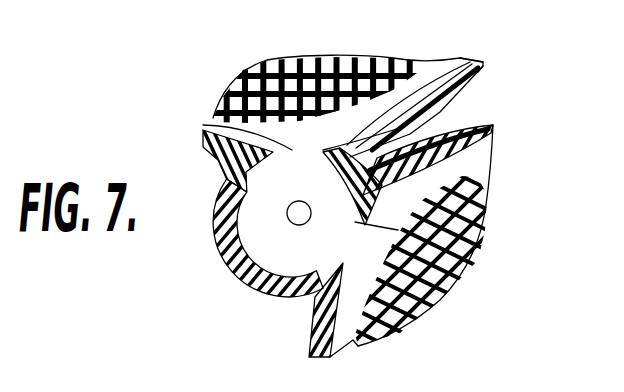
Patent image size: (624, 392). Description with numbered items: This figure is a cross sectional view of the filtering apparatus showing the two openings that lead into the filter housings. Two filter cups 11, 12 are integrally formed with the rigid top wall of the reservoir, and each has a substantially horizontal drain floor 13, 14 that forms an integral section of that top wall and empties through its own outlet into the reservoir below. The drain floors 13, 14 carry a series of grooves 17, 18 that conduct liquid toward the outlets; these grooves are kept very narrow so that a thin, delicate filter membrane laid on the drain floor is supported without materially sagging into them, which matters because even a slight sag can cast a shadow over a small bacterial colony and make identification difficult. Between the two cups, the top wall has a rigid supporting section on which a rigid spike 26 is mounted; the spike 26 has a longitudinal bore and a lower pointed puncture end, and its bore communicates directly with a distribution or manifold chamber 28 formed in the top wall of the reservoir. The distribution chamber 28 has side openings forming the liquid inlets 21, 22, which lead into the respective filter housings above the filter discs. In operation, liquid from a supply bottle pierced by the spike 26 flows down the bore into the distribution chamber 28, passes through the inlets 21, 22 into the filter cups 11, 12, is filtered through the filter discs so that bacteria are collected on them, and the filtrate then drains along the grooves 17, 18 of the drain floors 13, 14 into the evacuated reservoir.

The filter cup 11 is at (474, 64).
The filter cup 12 is at (312, 337).
The drain floor 13 is at (432, 86).
The drain floor 14 is at (474, 156).
The grooves 17 is at (374, 74).
The grooves 18 is at (487, 200).
The liquid inlet 21 is at (213, 119).
The liquid inlet 22 is at (413, 236).
The spike 26 is at (276, 209).
The distribution chamber 28 is at (266, 260).